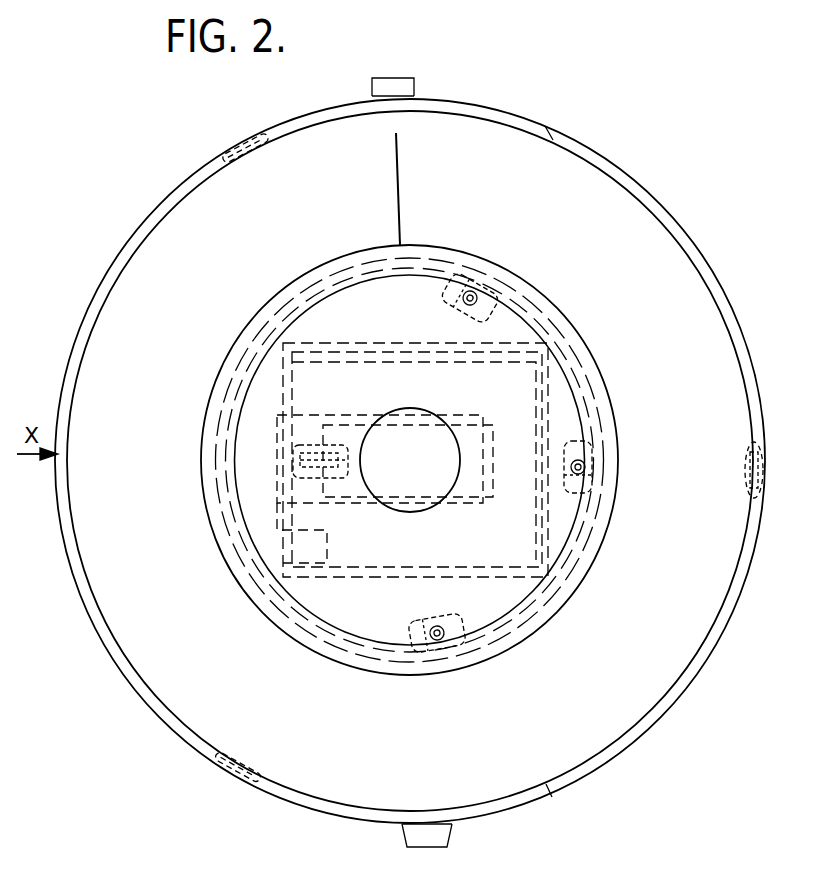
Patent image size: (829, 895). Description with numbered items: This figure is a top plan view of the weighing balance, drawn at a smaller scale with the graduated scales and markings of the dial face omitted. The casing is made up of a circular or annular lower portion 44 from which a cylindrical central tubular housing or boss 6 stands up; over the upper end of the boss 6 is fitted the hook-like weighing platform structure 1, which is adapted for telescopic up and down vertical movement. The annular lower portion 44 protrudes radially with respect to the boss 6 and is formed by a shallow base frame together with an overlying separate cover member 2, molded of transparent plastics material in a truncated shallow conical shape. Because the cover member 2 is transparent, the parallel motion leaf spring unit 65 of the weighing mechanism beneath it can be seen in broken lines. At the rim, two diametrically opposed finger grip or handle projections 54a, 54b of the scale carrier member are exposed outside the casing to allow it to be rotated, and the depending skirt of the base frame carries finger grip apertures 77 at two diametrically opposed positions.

The weighing platform structure 1 is at (541, 308).
The cover member 2 is at (697, 325).
The tubular housing or boss 6 is at (566, 593).
The annular lower portion 44 is at (634, 171).
The finger grip or handle projection 54a is at (416, 84).
The finger grip or handle projection 54b is at (447, 838).
The parallel motion leaf spring unit 65 is at (370, 523).
The finger grip apertures 77 is at (549, 130).